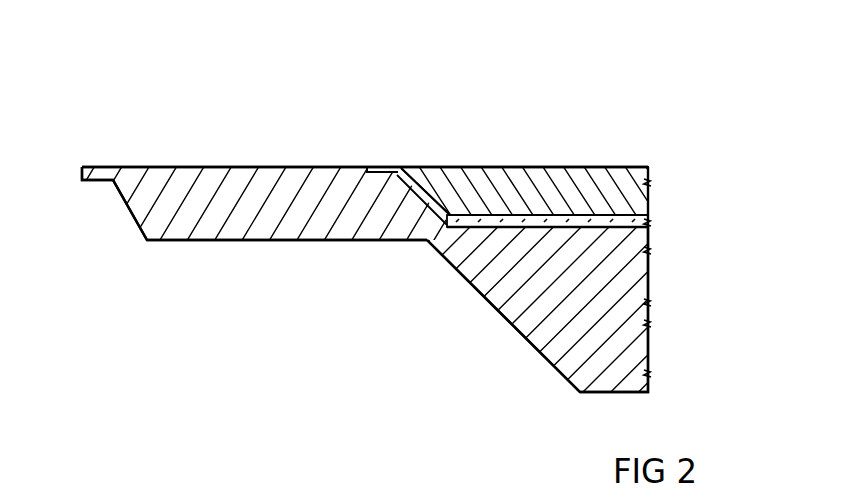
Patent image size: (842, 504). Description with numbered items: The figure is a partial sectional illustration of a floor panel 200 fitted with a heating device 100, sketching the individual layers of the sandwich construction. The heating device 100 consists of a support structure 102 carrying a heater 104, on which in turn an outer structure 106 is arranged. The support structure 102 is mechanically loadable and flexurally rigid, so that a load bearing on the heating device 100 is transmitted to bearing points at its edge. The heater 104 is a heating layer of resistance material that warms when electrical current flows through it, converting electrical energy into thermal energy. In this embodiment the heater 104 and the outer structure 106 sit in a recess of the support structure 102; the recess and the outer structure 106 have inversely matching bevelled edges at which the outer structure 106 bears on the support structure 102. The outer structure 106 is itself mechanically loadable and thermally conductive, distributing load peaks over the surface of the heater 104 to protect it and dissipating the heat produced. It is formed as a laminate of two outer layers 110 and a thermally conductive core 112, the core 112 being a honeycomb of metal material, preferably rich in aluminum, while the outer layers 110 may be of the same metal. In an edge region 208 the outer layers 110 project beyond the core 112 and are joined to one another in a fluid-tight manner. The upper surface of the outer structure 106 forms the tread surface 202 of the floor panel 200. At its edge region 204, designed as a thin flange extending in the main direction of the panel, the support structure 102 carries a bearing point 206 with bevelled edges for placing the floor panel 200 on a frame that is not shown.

The heating device 100 is at (662, 82).
The support structure 102 is at (648, 285).
The heater 104 is at (648, 221).
The outer structure 106 is at (648, 190).
The outer layers 110 is at (428, 180).
The thermally conductive core 112 is at (473, 190).
The floor panel 200 is at (184, 74).
The tread surface 202 is at (578, 167).
The edge region 204 is at (248, 167).
The bearing point 206 is at (318, 310).
The edge region 208 is at (373, 170).